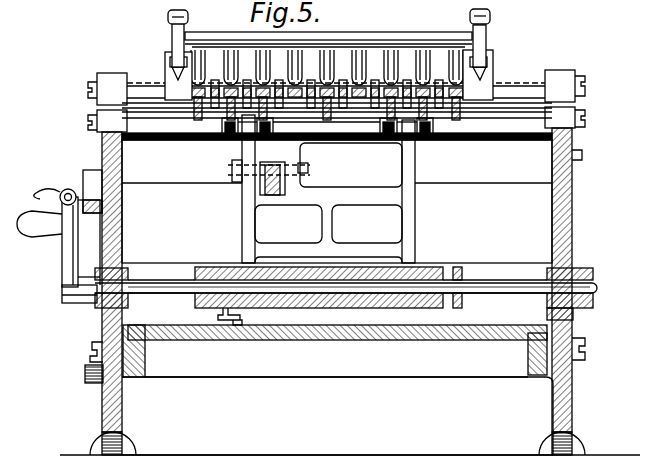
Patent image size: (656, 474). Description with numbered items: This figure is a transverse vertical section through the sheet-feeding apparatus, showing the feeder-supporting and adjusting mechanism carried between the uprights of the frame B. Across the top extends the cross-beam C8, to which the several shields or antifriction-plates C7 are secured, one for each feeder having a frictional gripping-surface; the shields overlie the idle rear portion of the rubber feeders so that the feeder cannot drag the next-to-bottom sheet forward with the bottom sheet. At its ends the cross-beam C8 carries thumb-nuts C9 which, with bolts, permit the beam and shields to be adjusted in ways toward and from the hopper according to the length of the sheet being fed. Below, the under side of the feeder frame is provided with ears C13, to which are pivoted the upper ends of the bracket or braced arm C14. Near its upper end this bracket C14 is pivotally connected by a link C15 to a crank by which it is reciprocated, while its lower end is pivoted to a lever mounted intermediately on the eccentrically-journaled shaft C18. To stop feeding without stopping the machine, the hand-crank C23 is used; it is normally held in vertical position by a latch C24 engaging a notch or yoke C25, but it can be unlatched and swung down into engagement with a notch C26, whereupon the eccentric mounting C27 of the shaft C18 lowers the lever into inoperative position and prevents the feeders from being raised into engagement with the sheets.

The frame B is at (125, 413).
The shield or antifriction-plate C7 is at (497, 62).
The cross-beam C8 is at (355, 38).
The thumb-nut C9 is at (503, 18).
The ear C13 is at (453, 153).
The bracket or braced arm C14 is at (410, 205).
The link C15 is at (265, 181).
The eccentrically-journaled shaft C18 is at (163, 283).
The hand-crank C23 is at (72, 248).
The latch C24 is at (60, 193).
The notch or yoke C25 is at (90, 200).
The notch C26 is at (85, 380).
The eccentric mounting C27 is at (115, 287).